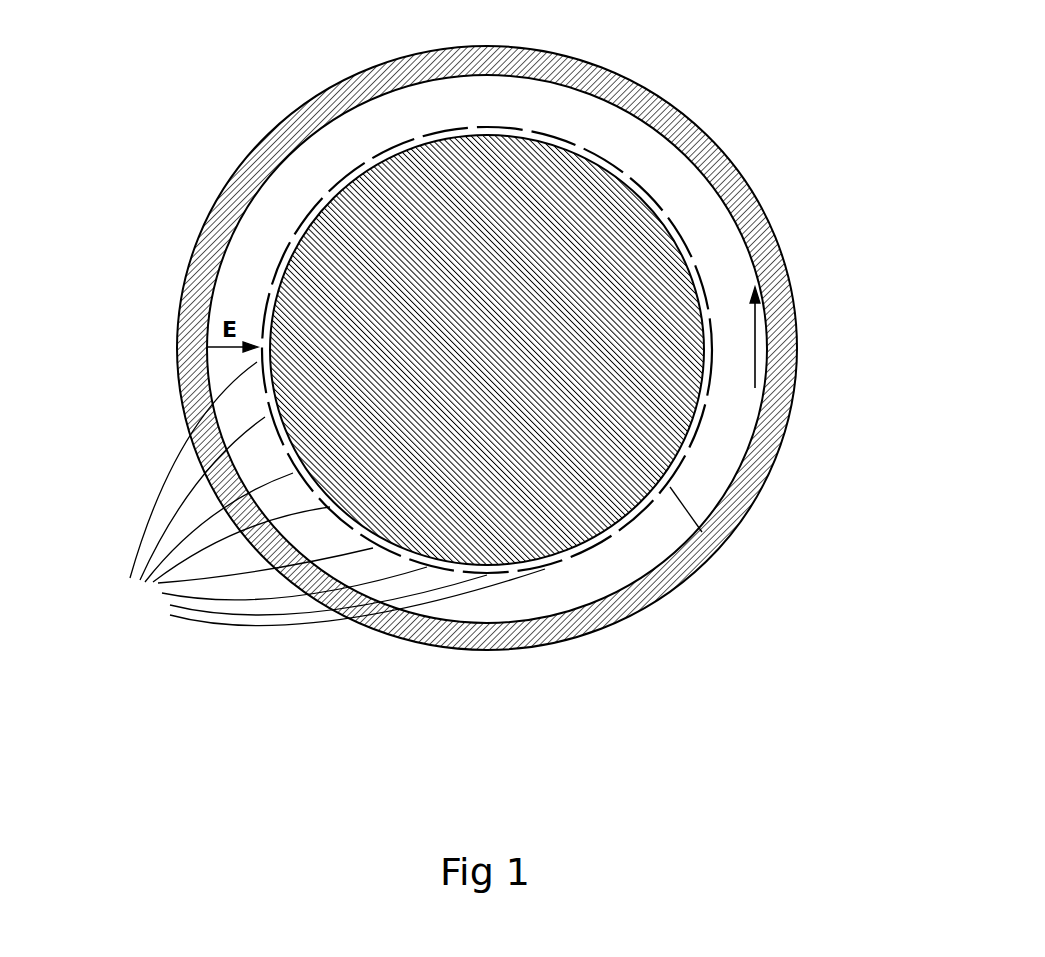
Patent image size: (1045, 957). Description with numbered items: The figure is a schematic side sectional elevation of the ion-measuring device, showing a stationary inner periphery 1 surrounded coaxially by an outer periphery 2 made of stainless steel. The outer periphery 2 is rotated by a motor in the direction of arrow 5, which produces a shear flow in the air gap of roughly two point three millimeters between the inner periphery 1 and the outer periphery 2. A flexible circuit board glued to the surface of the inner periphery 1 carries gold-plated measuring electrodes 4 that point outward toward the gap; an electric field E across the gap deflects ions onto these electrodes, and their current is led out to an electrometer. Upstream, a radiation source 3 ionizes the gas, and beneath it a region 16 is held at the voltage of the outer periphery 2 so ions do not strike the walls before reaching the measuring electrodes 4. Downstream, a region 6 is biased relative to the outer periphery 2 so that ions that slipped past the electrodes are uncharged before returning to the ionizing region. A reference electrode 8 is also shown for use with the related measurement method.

The stationary inner periphery 1 is at (513, 210).
The outer periphery 2 is at (720, 177).
The radiation source 3 is at (338, 177).
The measuring electrodes 4 is at (334, 494).
The arrow 5 is at (757, 348).
The region 6 is at (700, 538).
The reference electrode 8 is at (617, 157).
The region 16 is at (413, 140).